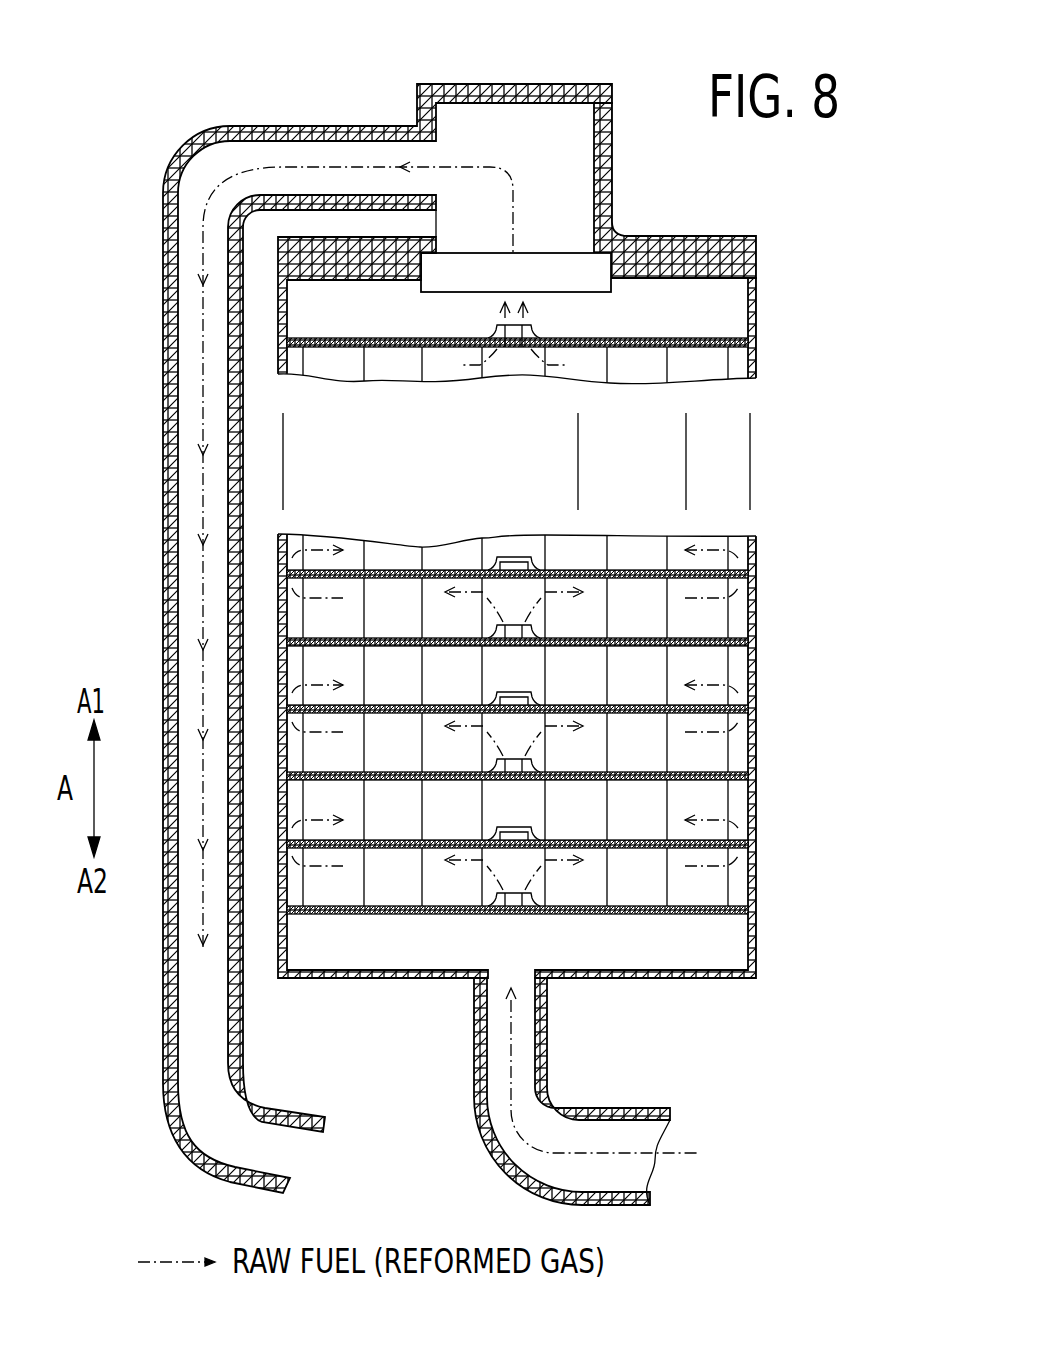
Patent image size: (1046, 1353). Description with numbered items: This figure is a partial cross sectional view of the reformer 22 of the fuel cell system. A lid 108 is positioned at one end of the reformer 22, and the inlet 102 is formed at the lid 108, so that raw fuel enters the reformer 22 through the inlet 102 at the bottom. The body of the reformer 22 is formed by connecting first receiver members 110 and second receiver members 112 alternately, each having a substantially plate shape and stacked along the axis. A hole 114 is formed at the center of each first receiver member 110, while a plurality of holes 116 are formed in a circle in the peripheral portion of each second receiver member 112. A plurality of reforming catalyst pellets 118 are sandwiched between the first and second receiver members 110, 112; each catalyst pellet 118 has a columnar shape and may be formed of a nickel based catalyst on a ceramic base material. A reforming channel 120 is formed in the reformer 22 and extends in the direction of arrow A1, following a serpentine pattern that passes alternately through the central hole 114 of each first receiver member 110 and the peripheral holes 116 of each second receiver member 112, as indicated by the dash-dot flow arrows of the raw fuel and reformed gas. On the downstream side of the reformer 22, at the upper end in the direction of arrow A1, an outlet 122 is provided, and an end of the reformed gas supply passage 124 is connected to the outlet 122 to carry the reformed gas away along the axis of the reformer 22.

The reformer 22 is at (107, 166).
The inlet 102 is at (523, 1023).
The lid 108 is at (757, 938).
The first receiver member 110 is at (757, 603).
The second receiver member 112 is at (757, 693).
The hole 114 is at (510, 913).
The holes 116 is at (757, 813).
The reforming catalyst pellets 118 is at (712, 680).
The reforming channel 120 is at (717, 550).
The outlet 122 is at (497, 160).
The reformed gas supply passage 124 is at (287, 125).